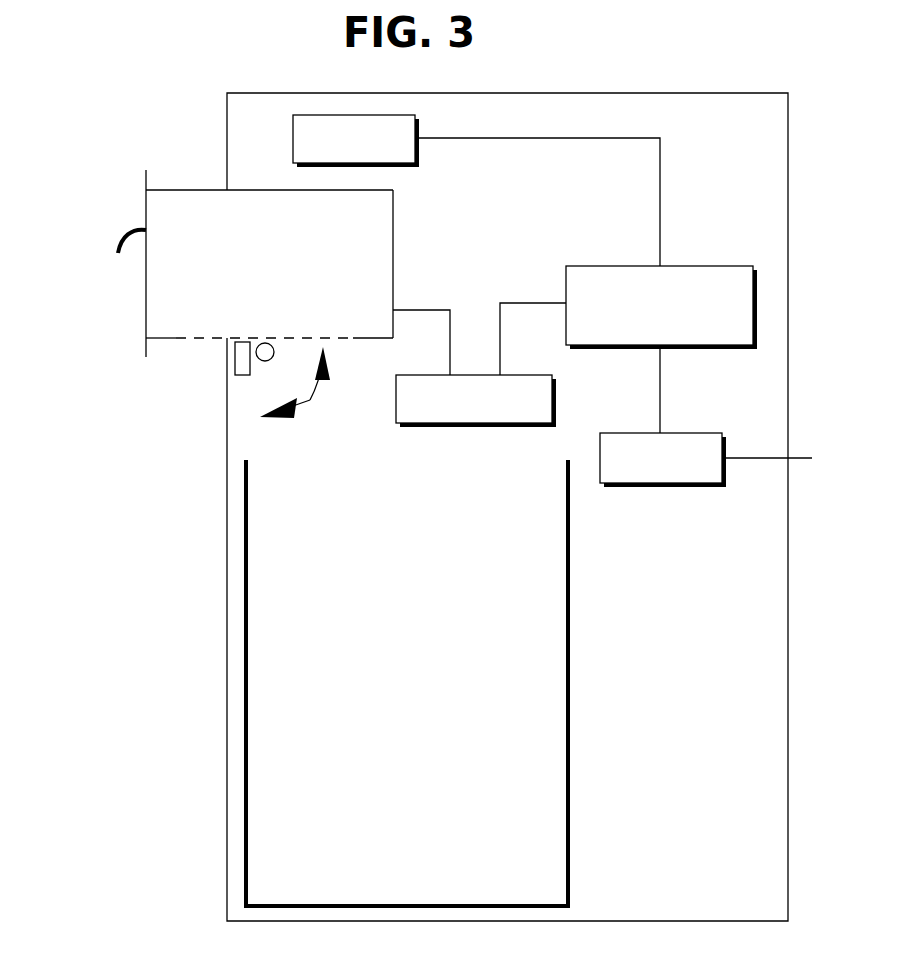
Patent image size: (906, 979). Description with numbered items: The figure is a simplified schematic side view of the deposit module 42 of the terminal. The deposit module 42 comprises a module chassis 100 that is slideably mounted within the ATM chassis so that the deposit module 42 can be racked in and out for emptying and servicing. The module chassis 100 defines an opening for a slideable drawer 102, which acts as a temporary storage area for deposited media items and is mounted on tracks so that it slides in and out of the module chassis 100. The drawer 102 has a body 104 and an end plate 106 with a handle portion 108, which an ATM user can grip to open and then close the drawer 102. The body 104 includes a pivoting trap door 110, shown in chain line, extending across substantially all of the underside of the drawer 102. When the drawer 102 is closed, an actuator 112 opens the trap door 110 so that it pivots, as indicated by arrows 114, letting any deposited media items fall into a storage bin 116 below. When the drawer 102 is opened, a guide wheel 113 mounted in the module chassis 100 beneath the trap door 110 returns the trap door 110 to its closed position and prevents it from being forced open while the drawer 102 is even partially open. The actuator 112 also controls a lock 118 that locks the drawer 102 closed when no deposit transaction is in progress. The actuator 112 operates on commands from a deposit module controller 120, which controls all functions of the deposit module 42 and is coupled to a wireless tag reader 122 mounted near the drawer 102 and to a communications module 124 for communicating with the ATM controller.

The deposit module 42 is at (172, 826).
The module chassis 100 is at (723, 93).
The slideable drawer 102 is at (118, 281).
The body 104 is at (197, 190).
The end plate 106 is at (145, 328).
The handle portion 108 is at (125, 232).
The pivoting trap door 110 is at (306, 338).
The actuator 112 is at (477, 423).
The guide wheel 113 is at (262, 343).
The arrows 114 is at (310, 400).
The storage bin 116 is at (570, 785).
The lock 118 is at (226, 368).
The deposit module controller 120 is at (704, 266).
The wireless tag reader 122 is at (418, 155).
The communications module 124 is at (690, 433).